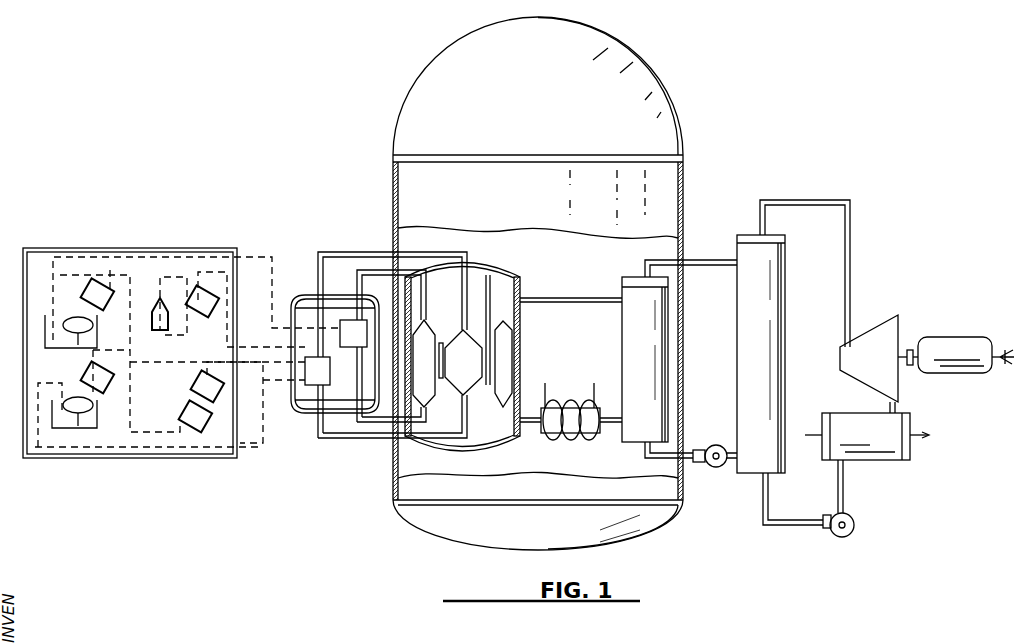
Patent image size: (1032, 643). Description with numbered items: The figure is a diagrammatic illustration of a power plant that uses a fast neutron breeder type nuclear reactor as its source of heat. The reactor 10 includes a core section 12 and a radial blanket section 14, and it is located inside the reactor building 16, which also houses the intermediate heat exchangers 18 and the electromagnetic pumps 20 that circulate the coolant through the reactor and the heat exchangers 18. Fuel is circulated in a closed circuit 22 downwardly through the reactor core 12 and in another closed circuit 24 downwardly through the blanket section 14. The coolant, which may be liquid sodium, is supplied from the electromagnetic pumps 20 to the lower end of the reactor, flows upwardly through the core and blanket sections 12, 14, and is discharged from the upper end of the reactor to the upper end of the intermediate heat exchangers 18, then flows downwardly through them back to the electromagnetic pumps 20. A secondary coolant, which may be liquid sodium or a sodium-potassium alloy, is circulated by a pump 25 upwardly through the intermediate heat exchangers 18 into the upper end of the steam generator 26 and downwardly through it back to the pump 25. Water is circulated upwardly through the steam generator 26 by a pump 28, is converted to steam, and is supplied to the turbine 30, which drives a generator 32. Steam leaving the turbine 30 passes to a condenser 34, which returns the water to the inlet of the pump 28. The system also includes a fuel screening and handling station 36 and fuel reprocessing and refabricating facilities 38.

The reactor 10 is at (524, 277).
The core section 12 is at (478, 398).
The radial blanket section 14 is at (507, 325).
The reactor building 16 is at (390, 187).
The intermediate heat exchangers 18 is at (618, 338).
The electromagnetic pumps 20 is at (577, 446).
The closed circuit 22 is at (355, 248).
The closed circuit 24 is at (377, 424).
The pump 25 is at (718, 468).
The steam generator 26 is at (736, 235).
The pump 28 is at (862, 525).
The turbine 30 is at (881, 320).
The generator 32 is at (953, 334).
The condenser 34 is at (886, 467).
The fuel screening and handling station 36 is at (307, 414).
The fuel reprocessing and refabricating facilities 38 is at (157, 463).